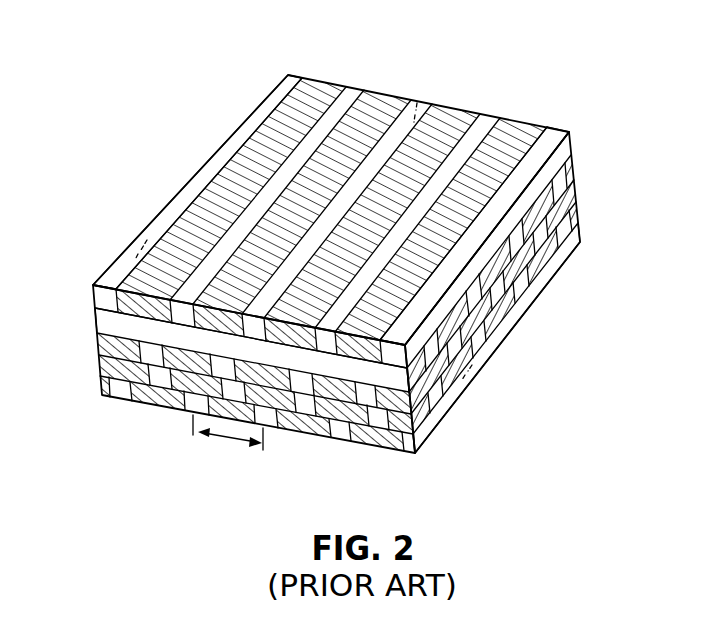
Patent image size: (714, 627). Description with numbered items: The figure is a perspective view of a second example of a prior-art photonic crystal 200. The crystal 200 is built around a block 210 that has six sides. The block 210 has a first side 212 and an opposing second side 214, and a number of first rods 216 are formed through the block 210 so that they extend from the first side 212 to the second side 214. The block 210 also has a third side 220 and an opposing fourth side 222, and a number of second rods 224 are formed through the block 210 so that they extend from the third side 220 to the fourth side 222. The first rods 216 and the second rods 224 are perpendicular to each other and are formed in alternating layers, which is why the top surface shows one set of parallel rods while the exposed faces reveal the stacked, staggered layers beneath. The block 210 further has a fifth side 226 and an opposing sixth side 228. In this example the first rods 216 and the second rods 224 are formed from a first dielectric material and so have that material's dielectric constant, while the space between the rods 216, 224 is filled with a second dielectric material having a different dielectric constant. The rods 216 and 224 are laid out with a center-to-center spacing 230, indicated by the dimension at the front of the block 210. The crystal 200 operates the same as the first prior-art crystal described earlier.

The photonic crystal 200 is at (342, 258).
The block 210 is at (370, 189).
The first side 212 is at (107, 315).
The second side 214 is at (423, 104).
The first rods 216 is at (360, 438).
The third side 220 is at (580, 227).
The fourth side 222 is at (148, 228).
The second rods 224 is at (571, 162).
The fifth side 226 is at (380, 113).
The sixth side 228 is at (480, 360).
The center-to-center spacing 230 is at (228, 438).